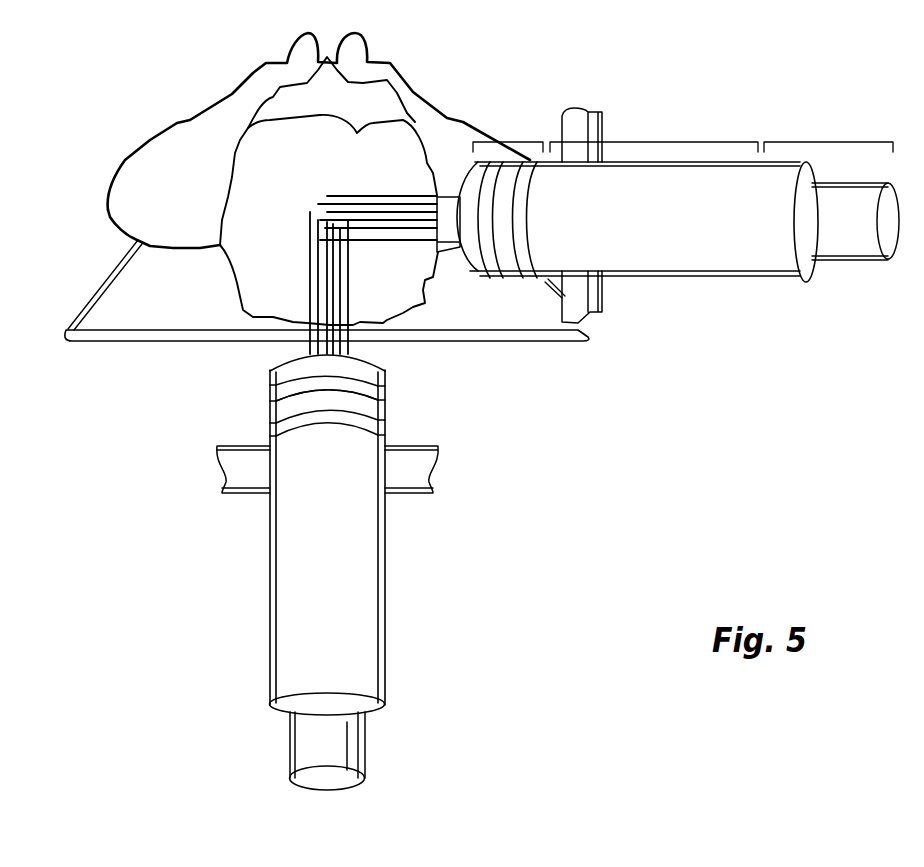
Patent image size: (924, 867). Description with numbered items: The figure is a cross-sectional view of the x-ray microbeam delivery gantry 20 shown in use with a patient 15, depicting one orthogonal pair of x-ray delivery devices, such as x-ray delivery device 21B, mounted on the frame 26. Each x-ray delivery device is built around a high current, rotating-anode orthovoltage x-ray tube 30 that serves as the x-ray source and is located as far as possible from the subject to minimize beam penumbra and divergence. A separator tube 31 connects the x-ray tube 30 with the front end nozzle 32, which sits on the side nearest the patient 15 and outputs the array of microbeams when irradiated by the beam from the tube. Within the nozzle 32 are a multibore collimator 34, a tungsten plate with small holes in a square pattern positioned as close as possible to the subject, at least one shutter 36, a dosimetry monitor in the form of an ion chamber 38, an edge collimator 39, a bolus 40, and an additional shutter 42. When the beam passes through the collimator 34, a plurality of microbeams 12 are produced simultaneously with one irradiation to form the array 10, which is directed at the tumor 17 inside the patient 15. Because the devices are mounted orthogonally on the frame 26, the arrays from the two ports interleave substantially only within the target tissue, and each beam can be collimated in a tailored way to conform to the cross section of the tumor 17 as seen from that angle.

The array 10 is at (454, 204).
The microbeams 12 is at (316, 239).
The patient 15 is at (147, 142).
The tumor 17 is at (245, 128).
The x-ray delivery gantry 20 is at (548, 420).
The x-ray delivery device 21B is at (857, 262).
The frame 26 is at (600, 297).
The x-ray tube 30 is at (828, 142).
The separator tube 31 is at (663, 142).
The front end nozzle 32 is at (512, 142).
The multibore collimator 34 is at (270, 381).
The shutter 36 is at (270, 408).
The ion chamber 38 is at (386, 372).
The edge collimator 39 is at (386, 400).
The bolus 40 is at (270, 420).
The additional shutter 42 is at (386, 433).